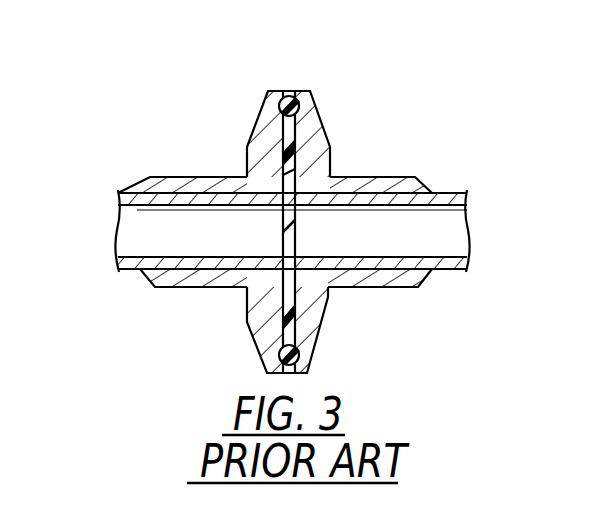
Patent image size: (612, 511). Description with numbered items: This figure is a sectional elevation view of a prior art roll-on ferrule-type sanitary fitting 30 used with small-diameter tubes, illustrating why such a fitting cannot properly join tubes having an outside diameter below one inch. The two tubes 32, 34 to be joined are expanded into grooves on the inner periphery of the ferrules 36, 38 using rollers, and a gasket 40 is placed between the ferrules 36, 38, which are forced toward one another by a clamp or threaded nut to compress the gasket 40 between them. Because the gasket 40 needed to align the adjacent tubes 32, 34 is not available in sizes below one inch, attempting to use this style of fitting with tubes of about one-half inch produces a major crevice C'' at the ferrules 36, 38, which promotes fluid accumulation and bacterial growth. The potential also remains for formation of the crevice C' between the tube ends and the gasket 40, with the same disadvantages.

The roll-on ferrule-type fitting 30 is at (453, 83).
The tube 32 is at (143, 268).
The tube 34 is at (448, 268).
The ferrule 36 is at (200, 140).
The ferrule 38 is at (383, 177).
The gasket 40 is at (292, 92).
The crevice C' is at (134, 239).
The major crevice C'' is at (210, 327).